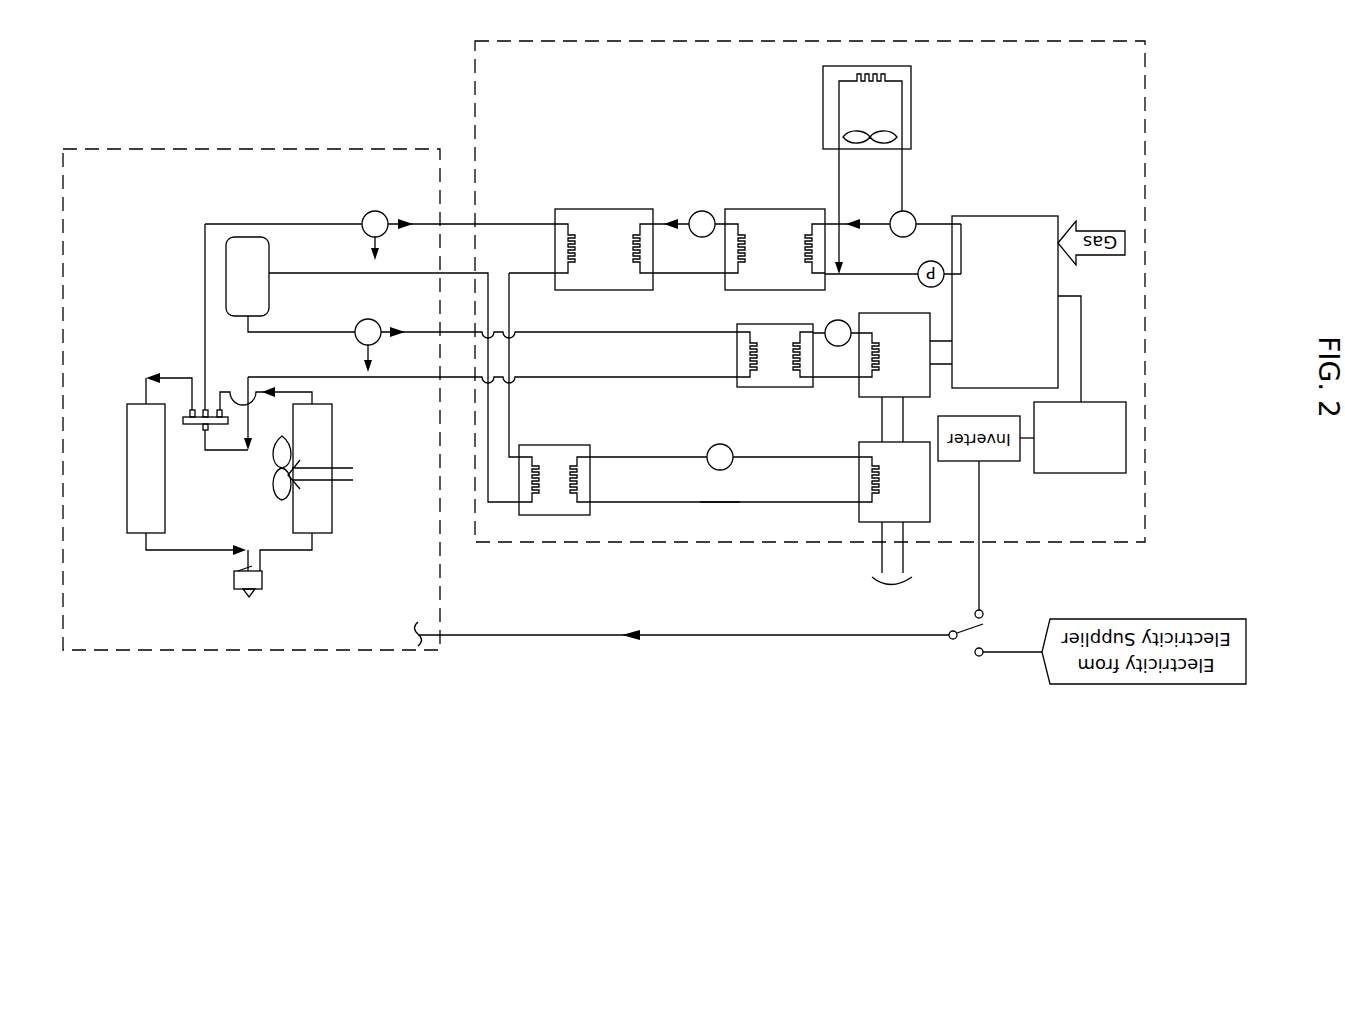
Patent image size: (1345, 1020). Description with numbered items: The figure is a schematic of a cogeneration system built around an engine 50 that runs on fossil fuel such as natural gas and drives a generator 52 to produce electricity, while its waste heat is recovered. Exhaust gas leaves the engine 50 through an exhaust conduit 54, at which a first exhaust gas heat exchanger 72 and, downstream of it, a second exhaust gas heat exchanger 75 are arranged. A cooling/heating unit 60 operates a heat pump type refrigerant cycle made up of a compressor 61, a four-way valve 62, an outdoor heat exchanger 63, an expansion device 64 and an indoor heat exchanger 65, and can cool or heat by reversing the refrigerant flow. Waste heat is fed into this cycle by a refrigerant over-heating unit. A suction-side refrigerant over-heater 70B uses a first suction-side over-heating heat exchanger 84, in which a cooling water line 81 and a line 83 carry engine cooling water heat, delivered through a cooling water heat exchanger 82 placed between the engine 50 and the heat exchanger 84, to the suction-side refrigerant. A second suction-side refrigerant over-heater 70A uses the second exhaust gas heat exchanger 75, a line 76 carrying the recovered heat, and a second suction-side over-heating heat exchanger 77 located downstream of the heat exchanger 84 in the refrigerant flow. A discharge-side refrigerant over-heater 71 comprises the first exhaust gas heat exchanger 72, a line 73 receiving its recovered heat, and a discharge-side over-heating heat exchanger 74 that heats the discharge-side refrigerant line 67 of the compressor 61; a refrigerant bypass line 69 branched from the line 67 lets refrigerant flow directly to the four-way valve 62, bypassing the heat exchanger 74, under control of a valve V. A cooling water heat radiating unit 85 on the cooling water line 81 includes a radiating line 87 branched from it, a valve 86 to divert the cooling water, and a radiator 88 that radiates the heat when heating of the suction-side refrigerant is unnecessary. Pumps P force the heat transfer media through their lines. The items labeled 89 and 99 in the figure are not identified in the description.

The engine 50 is at (1022, 228).
The generator 52 is at (1063, 463).
The exhaust conduit 54 is at (893, 552).
The cooling/heating unit 60 is at (259, 660).
The compressor 61 is at (226, 255).
The four-way valve 62 is at (190, 412).
The outdoor heat exchanger 63 is at (318, 527).
The expansion device 64 is at (236, 584).
The indoor heat exchanger 65 is at (130, 490).
The discharge-side refrigerant line 67 is at (422, 379).
The refrigerant bypass line 69 is at (366, 357).
The suction-side refrigerant over-heater 70A is at (570, 525).
The suction-side refrigerant over-heater 70B is at (647, 178).
The discharge-side refrigerant over-heater 71 is at (658, 385).
The first exhaust gas heat exchanger 72 is at (870, 397).
The line 73 is at (836, 348).
The discharge-side over-heating heat exchanger 74 is at (765, 380).
The second exhaust gas heat exchanger 75 is at (873, 512).
The line 76 is at (720, 505).
The second suction-side over-heating heat exchanger 77 is at (548, 508).
The cooling water line 81 is at (938, 222).
The cooling water heat exchanger 82 is at (757, 218).
The line 83 is at (675, 222).
The first suction-side over-heating heat exchanger 84 is at (600, 220).
The cooling water heat radiating unit 85 is at (930, 101).
The valve 86 is at (897, 212).
The radiating line 87 is at (838, 182).
The radiator 88 is at (823, 96).
The three-way valve 89 is at (370, 248).
The refrigerant line 99 is at (425, 222).